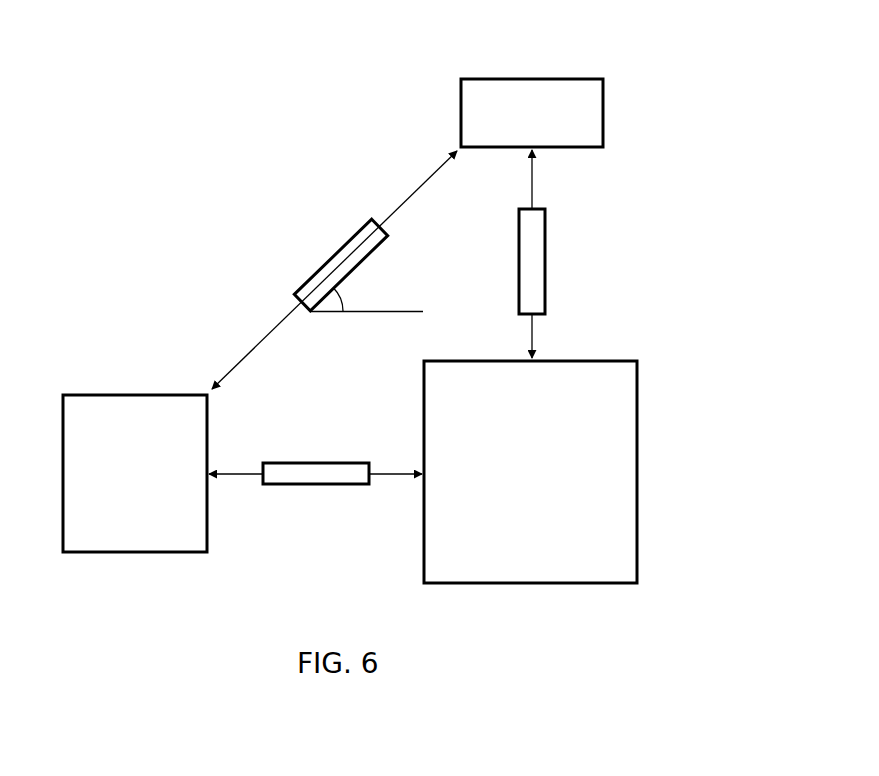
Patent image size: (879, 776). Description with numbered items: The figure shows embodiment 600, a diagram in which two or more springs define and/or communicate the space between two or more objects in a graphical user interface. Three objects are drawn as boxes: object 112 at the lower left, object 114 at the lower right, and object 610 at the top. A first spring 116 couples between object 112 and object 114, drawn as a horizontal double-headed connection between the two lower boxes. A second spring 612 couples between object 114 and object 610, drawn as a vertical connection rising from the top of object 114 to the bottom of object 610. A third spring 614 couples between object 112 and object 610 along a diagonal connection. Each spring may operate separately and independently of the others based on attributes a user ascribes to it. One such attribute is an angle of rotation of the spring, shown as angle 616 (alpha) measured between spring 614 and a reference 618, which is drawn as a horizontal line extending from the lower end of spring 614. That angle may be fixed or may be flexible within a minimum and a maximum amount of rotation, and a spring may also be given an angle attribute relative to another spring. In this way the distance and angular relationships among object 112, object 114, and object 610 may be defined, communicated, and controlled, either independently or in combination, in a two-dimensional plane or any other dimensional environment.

The embodiment 600 is at (710, 165).
The object 610 is at (567, 79).
The spring 612 is at (519, 254).
The spring 614 is at (332, 256).
The angle 616 is at (327, 313).
The reference 618 is at (412, 311).
The object 112 is at (173, 395).
The object 114 is at (603, 361).
The spring 116 is at (341, 463).